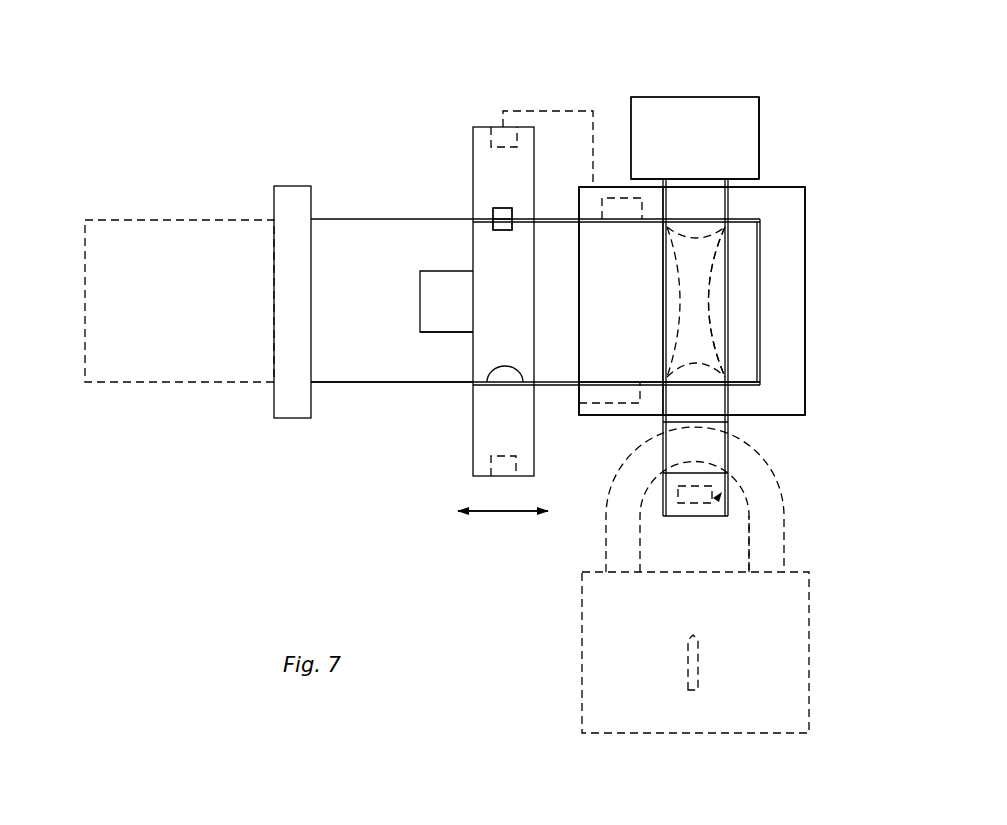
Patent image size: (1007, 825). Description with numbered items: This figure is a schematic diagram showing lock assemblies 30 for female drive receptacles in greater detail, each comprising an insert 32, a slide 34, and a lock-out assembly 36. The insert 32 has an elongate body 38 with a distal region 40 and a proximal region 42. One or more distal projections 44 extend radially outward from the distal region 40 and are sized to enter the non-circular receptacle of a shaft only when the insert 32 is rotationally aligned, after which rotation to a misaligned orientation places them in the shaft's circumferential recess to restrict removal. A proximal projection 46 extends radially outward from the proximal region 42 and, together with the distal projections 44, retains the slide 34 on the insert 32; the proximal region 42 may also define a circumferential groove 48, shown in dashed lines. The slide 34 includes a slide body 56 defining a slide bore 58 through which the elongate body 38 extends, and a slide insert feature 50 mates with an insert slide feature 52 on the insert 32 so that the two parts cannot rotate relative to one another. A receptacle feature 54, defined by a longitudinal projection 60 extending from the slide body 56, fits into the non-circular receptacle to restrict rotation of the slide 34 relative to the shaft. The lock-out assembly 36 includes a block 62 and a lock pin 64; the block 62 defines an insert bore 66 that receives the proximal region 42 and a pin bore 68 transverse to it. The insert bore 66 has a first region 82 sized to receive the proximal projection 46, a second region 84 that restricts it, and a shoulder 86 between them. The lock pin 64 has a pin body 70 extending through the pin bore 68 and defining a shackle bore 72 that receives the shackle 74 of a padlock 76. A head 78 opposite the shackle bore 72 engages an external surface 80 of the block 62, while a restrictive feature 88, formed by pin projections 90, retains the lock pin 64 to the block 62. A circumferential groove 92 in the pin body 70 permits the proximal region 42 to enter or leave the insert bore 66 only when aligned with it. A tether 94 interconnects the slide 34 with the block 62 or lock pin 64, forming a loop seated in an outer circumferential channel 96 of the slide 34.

The lock assembly 30 is at (860, 112).
The insert 32 is at (385, 216).
The slide 34 is at (469, 160).
The lock-out assembly 36 is at (806, 116).
The elongate body 38 is at (348, 383).
The distal region 40 is at (382, 403).
The proximal region 42 is at (605, 428).
The distal projections 44 is at (287, 186).
The proximal projection 46 is at (622, 198).
The circumferential groove 48 is at (697, 237).
The slide insert feature 50 is at (503, 230).
The insert slide feature 52 is at (497, 208).
The receptacle feature 54 is at (435, 271).
The slide body 56 is at (473, 427).
The slide bore 58 is at (522, 384).
The longitudinal projection 60 is at (437, 339).
The block 62 is at (808, 265).
The lock pin 64 is at (765, 102).
The insert bore 66 is at (741, 383).
The pin bore 68 is at (662, 337).
The pin body 70 is at (727, 328).
The shackle bore 72 is at (695, 473).
The shackle 74 is at (784, 517).
The padlock 76 is at (822, 605).
The head 78 is at (759, 152).
The external surface 80 is at (742, 187).
The first region 82 is at (598, 199).
The second region 84 is at (707, 347).
The shoulder 86 is at (630, 390).
The restrictive feature 88 is at (737, 502).
The pin projections 90 is at (680, 503).
The circumferential groove 92 is at (710, 295).
The tether 94 is at (550, 111).
The outer circumferential channel 96 is at (500, 127).